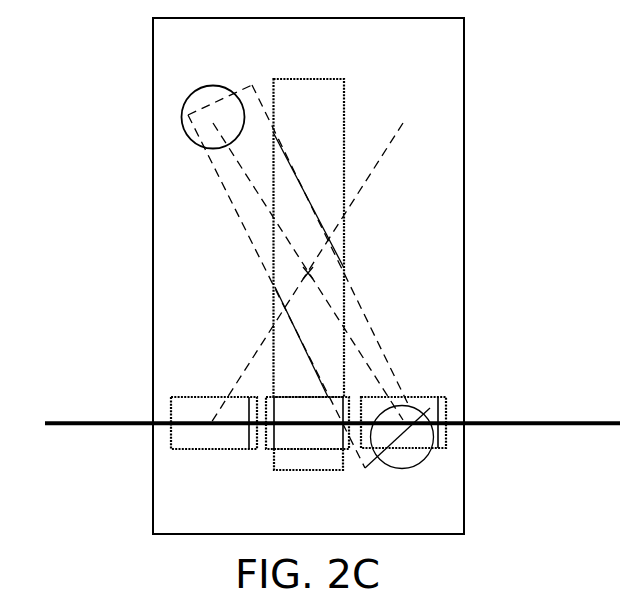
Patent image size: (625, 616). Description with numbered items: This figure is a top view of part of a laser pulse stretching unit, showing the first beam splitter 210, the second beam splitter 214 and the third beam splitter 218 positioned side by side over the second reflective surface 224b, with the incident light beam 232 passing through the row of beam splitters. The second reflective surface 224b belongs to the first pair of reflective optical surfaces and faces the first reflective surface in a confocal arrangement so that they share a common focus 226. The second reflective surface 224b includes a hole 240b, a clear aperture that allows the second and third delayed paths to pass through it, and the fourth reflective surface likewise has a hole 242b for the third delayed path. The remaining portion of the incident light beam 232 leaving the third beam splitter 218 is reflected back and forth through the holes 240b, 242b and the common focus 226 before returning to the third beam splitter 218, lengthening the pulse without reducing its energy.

The second reflective surface 224b is at (153, 79).
The hole 240b is at (212, 87).
The hole 242b is at (213, 170).
The common focus 226 is at (302, 272).
The third beam splitter 218 is at (417, 397).
The incident light beam 232 is at (80, 426).
The first beam splitter 210 is at (218, 452).
The second beam splitter 214 is at (307, 455).